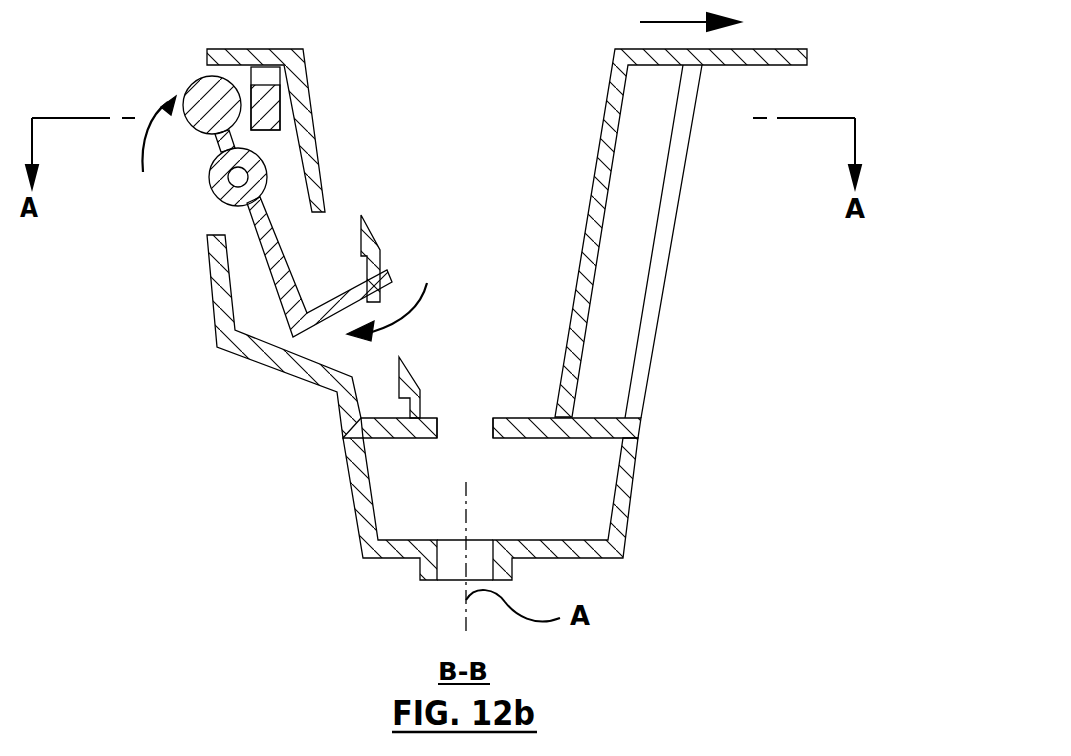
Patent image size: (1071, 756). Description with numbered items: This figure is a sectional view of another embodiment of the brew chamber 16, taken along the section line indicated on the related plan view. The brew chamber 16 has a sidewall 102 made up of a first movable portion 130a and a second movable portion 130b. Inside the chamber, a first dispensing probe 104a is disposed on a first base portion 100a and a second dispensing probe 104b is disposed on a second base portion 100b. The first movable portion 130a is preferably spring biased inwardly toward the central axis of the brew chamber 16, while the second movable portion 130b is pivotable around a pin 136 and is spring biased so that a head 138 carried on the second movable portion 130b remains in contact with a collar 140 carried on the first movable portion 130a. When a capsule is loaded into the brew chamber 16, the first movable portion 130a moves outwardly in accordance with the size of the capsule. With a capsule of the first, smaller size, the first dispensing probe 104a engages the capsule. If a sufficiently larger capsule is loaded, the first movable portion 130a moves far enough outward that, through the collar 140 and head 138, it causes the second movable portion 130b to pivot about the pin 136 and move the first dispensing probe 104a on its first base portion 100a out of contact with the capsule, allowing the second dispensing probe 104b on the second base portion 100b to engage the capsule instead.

The brew chamber 16 is at (770, 294).
The first base portion 100a is at (343, 296).
The second base portion 100b is at (372, 412).
The sidewall 102 is at (647, 335).
The first dispensing probe 104a is at (380, 218).
The second dispensing probe 104b is at (421, 374).
The first movable portion 130a is at (605, 130).
The second movable portion 130b is at (214, 289).
The pin 136 is at (232, 174).
The head 138 is at (197, 90).
The collar 140 is at (276, 105).